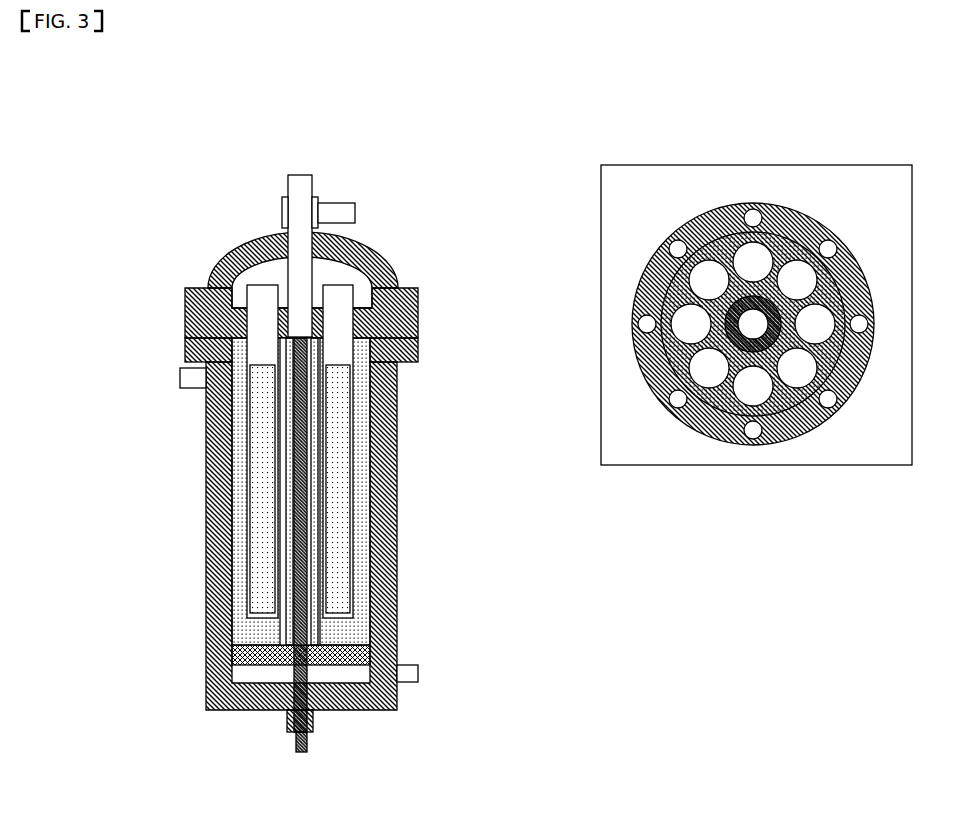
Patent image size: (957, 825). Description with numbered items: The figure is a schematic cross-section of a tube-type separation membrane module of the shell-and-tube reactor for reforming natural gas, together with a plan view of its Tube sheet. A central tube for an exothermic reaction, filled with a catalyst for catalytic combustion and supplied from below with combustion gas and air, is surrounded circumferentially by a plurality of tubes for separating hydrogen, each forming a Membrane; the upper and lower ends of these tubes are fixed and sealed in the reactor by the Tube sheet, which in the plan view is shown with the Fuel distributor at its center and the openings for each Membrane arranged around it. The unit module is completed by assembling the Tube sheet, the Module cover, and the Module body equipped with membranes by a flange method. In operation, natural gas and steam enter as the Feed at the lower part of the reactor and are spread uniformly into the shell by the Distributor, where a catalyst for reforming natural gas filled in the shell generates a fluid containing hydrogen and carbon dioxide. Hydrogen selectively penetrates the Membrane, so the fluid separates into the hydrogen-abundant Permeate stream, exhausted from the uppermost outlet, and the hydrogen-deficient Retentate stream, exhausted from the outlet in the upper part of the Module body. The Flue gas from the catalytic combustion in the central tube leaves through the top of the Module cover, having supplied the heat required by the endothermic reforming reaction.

The flue gas Flue gas is at (300, 175).
The permeate stream Permeate stream is at (355, 213).
The module cover Module cover is at (215, 263).
The tube sheet Tube sheet is at (416, 328).
The fuel distributor Fuel distributor is at (752, 290).
The retentate stream Retentate stream is at (180, 378).
The module body Module body is at (206, 438).
The membrane Membrane is at (678, 413).
The distributor Distributor is at (283, 565).
The feed Feed is at (419, 672).